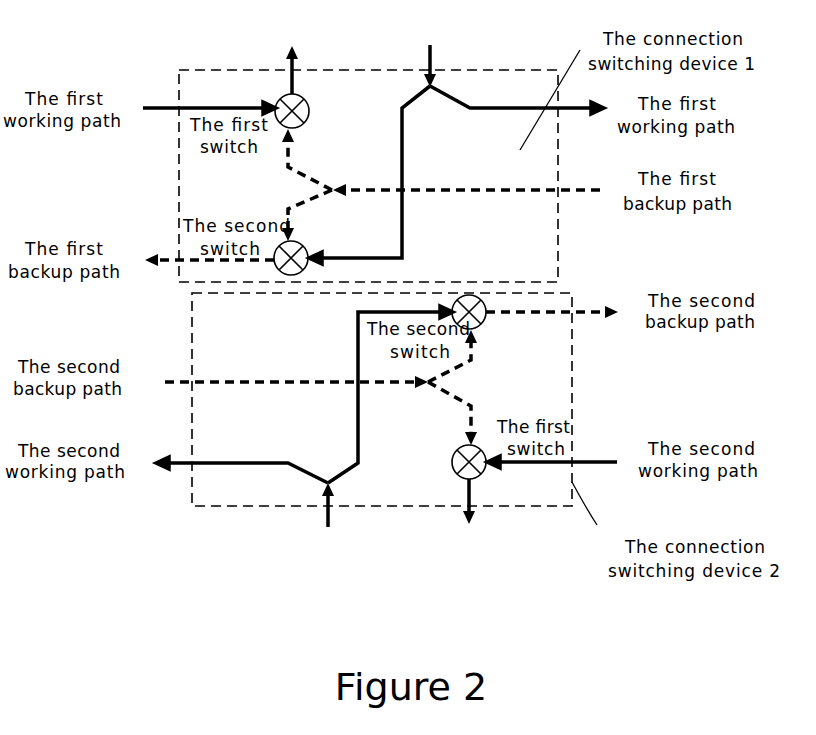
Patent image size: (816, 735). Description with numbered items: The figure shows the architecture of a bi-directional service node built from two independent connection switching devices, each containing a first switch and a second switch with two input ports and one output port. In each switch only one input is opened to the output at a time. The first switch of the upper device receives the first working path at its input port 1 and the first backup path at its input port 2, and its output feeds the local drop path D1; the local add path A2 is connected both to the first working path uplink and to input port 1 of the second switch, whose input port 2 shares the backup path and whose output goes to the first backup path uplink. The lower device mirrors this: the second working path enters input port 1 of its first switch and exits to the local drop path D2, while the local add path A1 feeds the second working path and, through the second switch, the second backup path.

The input port 1 is at (380, 280).
The input port 2 is at (381, 287).
The local drop path D1 is at (289, 57).
The local add path A2 is at (430, 55).
The local add path A1 is at (330, 525).
The local drop path D2 is at (464, 525).